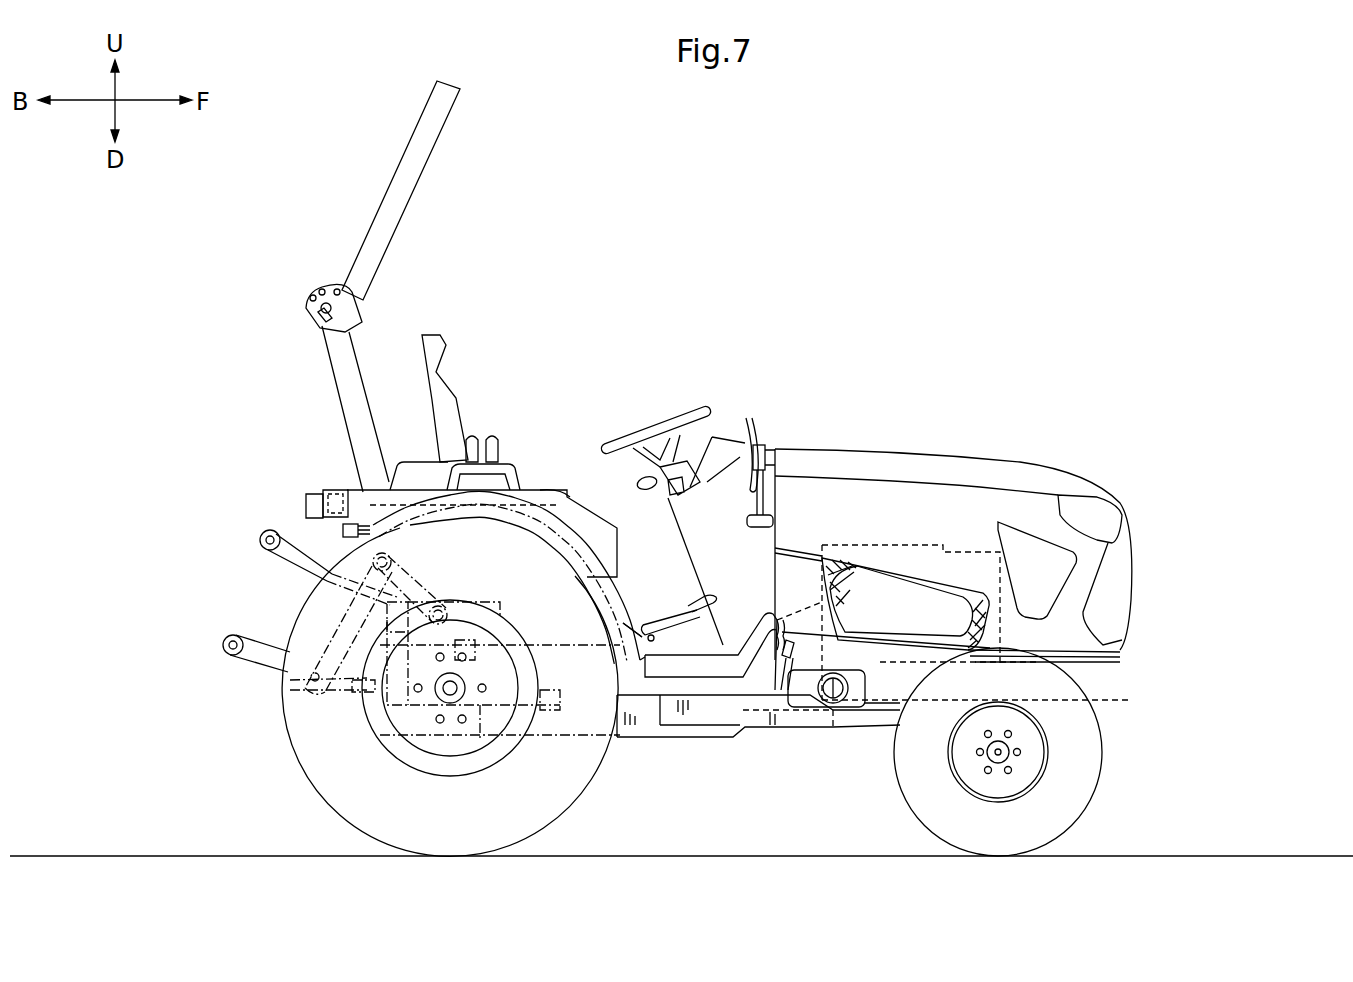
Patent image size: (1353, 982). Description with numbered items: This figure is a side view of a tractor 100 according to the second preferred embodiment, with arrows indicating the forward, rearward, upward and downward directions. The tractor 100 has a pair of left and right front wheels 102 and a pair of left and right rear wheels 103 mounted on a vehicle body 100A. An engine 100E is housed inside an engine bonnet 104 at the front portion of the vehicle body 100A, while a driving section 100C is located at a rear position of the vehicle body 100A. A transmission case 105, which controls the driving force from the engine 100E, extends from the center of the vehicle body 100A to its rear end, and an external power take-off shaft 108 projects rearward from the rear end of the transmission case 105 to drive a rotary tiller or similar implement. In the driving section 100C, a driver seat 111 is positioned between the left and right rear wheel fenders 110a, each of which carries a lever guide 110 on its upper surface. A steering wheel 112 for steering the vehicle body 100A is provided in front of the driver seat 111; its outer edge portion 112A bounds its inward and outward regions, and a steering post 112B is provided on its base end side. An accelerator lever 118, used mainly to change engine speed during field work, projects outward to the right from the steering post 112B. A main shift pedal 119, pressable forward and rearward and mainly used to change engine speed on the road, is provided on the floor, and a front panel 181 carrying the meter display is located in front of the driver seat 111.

The tractor 100 is at (904, 132).
The vehicle body 100A is at (757, 768).
The driving section 100C is at (558, 366).
The engine 100E is at (937, 545).
The front wheels 102 is at (1078, 805).
The rear wheels 103 is at (350, 803).
The engine bonnet 104 is at (1030, 478).
The transmission case 105 is at (650, 730).
The external power take-off shaft 108 is at (358, 706).
The lever guide 110 is at (432, 490).
The rear wheel fender 110a is at (622, 600).
The driver seat 111 is at (440, 345).
The steering wheel 112 is at (632, 447).
The outer edge portion 112A is at (703, 455).
The steering post 112B is at (668, 500).
The accelerator lever 118 is at (637, 483).
The main shift pedal 119 is at (685, 617).
The front panel 181 is at (705, 452).